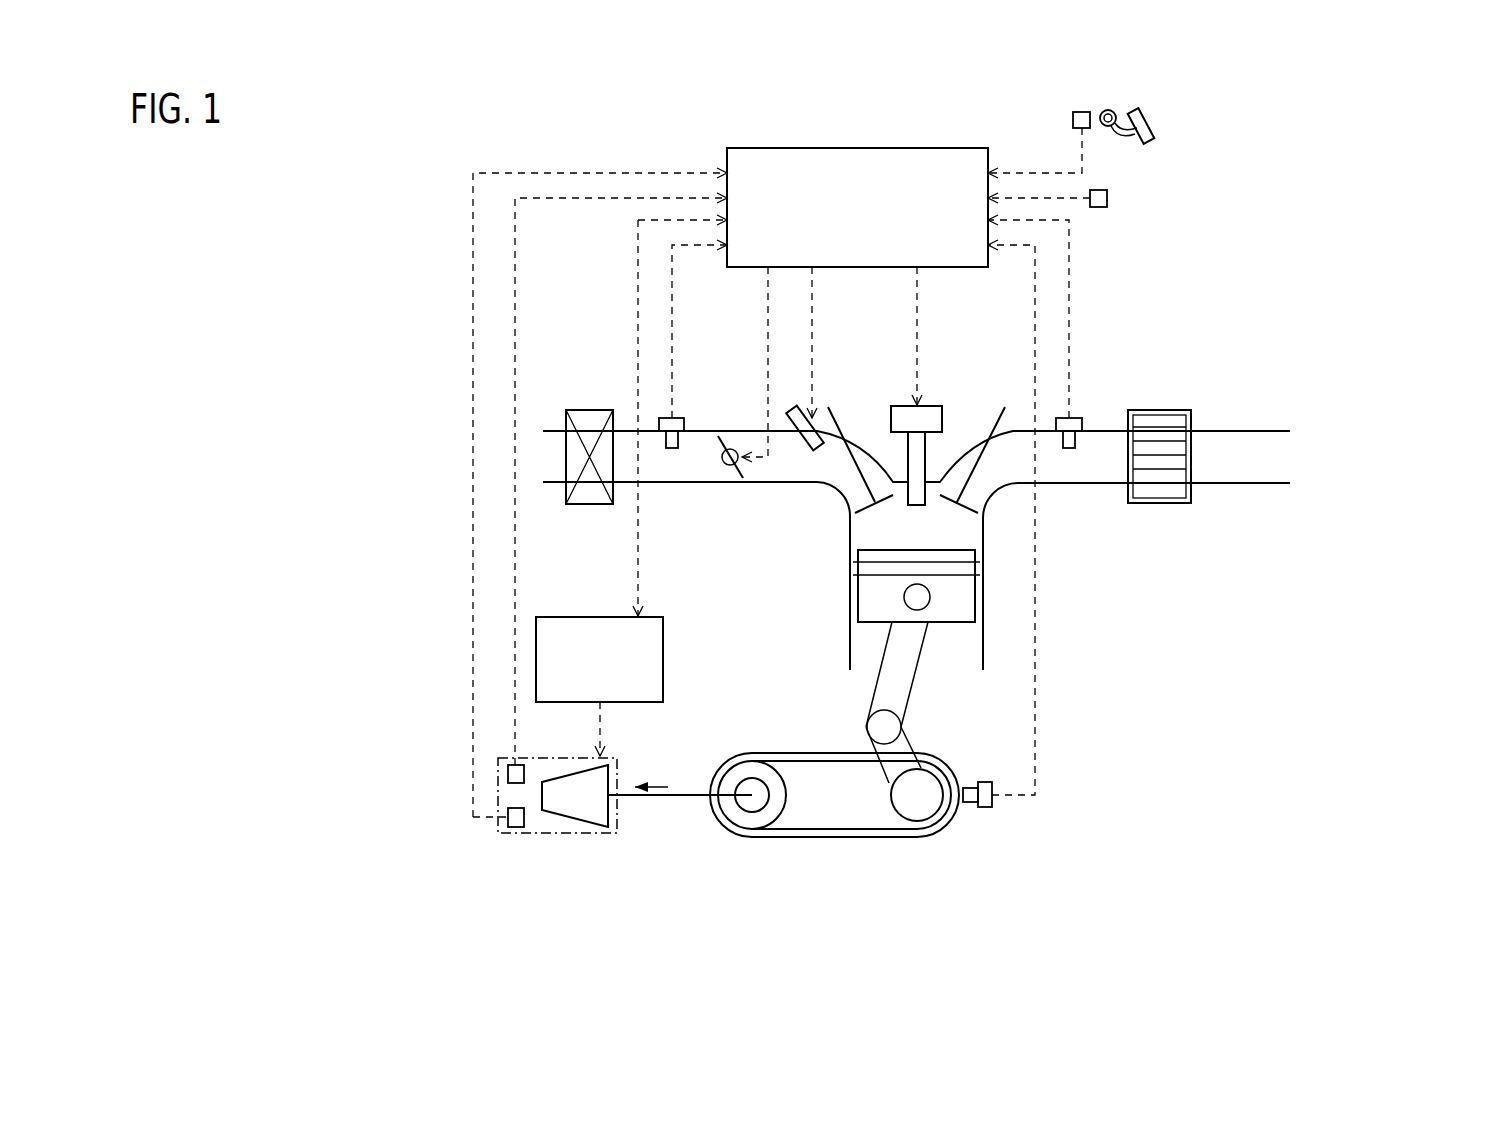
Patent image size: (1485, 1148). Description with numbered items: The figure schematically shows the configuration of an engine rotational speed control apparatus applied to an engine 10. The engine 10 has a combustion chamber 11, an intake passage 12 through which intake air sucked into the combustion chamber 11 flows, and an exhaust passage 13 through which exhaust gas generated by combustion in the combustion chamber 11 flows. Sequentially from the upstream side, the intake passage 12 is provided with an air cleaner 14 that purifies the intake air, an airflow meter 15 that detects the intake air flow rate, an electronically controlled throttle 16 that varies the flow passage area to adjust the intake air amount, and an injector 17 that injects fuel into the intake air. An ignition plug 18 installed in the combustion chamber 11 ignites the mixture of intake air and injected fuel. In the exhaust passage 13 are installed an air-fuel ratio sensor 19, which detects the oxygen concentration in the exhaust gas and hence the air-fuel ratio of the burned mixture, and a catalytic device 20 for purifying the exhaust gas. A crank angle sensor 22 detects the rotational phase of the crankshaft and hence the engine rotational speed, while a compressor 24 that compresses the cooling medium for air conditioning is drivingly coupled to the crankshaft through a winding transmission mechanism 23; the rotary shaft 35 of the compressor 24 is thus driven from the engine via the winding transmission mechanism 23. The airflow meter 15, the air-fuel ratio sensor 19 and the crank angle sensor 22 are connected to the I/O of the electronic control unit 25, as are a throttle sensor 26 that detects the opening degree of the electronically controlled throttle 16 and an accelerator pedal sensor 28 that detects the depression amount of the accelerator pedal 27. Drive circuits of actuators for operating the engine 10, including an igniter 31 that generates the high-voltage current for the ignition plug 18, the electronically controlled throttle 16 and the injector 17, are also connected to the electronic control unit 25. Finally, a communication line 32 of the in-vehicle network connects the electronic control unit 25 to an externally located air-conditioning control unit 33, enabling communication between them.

The engine 10 is at (1156, 641).
The combustion chamber 11 is at (879, 533).
The intake passage 12 is at (782, 483).
The exhaust passage 13 is at (1097, 483).
The air cleaner 14 is at (599, 409).
The airflow meter 15 is at (658, 418).
The electronically controlled throttle 16 is at (730, 449).
The injector 17 is at (795, 410).
The ignition plug 18 is at (927, 448).
The air-fuel ratio sensor 19 is at (1077, 417).
The catalytic device 20 is at (1165, 410).
The crank angle sensor 22 is at (988, 808).
The winding transmission mechanism 23 is at (816, 838).
The compressor 24 is at (558, 813).
The electronic control unit 25 is at (846, 244).
The throttle sensor 26 is at (1108, 198).
The accelerator pedal 27 is at (1150, 118).
The accelerator pedal sensor 28 is at (1080, 112).
The igniter 31 is at (941, 406).
The communication line 32 is at (610, 549).
The air-conditioning control unit 33 is at (589, 695).
The rotary shaft 35 is at (688, 798).